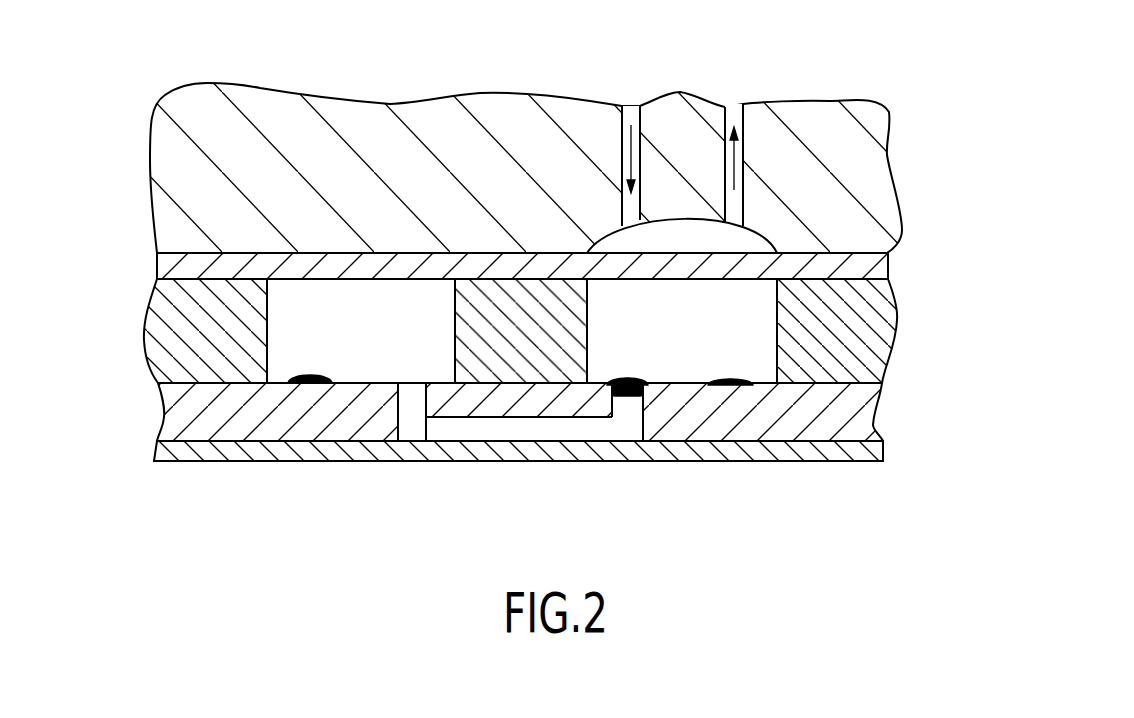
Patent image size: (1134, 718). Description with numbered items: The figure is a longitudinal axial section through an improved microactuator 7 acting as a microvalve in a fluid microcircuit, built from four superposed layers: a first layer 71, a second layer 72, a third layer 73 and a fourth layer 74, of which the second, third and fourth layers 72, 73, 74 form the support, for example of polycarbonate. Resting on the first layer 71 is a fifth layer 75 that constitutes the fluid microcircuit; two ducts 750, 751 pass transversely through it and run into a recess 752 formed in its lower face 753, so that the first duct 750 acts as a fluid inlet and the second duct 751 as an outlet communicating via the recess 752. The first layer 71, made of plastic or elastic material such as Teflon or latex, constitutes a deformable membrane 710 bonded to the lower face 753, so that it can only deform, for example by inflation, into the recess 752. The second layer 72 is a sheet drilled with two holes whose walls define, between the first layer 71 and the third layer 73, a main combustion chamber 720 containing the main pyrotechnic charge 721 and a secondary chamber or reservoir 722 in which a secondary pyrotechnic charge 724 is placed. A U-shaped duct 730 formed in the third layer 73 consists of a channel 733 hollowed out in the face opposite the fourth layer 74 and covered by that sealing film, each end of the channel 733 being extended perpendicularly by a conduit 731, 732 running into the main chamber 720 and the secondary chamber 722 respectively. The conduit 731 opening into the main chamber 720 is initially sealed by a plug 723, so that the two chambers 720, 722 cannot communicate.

The microactuator 7 is at (135, 318).
The fifth layer 75 is at (863, 172).
The first duct 750 is at (639, 106).
The second duct 751 is at (735, 107).
The recess 752 is at (673, 242).
The deformable membrane 710 is at (747, 262).
The first layer 71 is at (873, 268).
The lower face 753 is at (362, 260).
The second layer 72 is at (876, 328).
The secondary chamber 722 is at (435, 333).
The main combustion chamber 720 is at (705, 320).
The secondary pyrotechnic charge 724 is at (315, 379).
The plug 723 is at (622, 379).
The main pyrotechnic charge 721 is at (735, 380).
The third layer 73 is at (862, 403).
The conduit 732 is at (421, 462).
The U-shaped duct 730 is at (525, 428).
The channel 733 is at (458, 418).
The conduit 731 is at (625, 408).
The fourth layer 74 is at (880, 451).